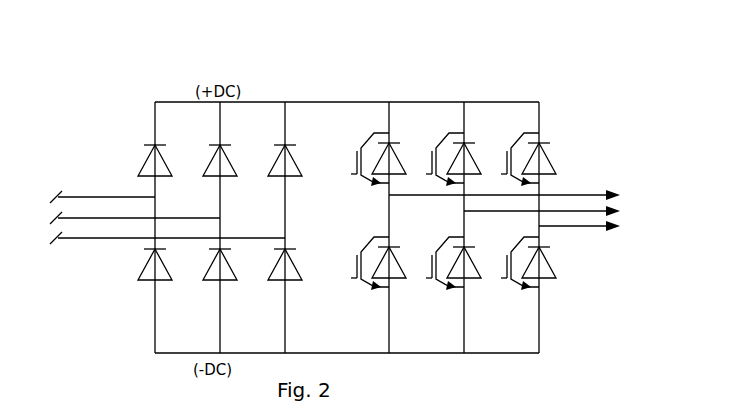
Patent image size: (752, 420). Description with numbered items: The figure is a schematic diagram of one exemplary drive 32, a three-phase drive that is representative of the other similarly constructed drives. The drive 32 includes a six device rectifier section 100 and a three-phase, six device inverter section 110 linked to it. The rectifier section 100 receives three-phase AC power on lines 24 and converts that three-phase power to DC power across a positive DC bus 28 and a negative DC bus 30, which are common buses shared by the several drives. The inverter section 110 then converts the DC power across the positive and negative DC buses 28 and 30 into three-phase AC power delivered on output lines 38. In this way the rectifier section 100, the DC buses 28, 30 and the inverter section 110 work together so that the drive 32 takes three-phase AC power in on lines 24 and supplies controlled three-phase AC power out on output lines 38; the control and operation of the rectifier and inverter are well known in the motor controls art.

The rectifier section 100 is at (140, 134).
The lines 24 is at (110, 242).
The positive DC bus 28 is at (417, 102).
The negative DC bus 30 is at (428, 354).
The inverter section 110 is at (492, 79).
The drive 32 is at (590, 110).
The output lines 38 is at (587, 238).